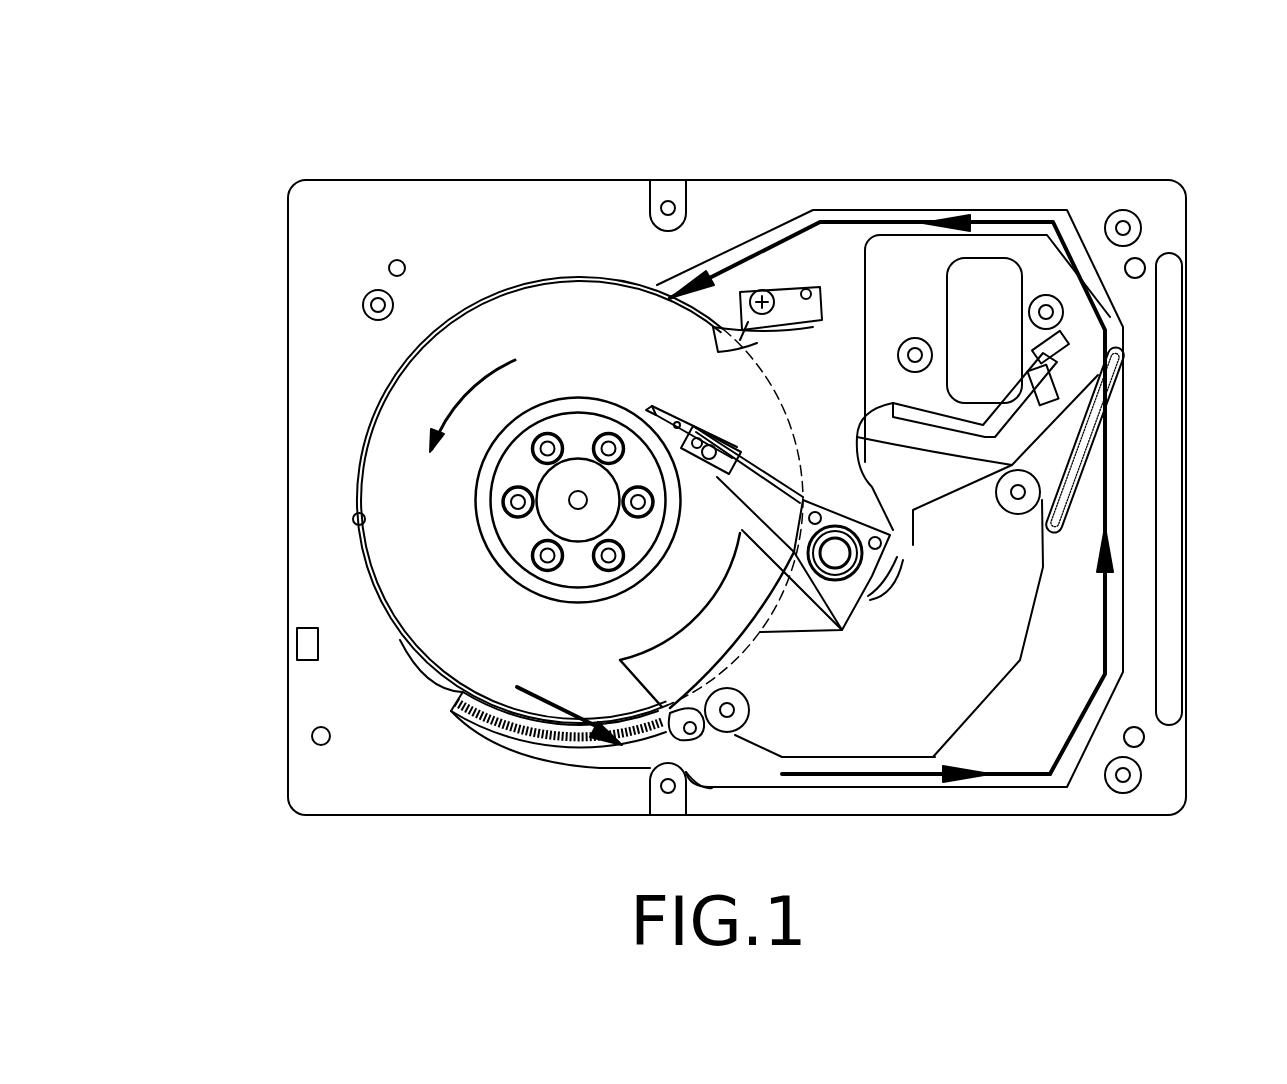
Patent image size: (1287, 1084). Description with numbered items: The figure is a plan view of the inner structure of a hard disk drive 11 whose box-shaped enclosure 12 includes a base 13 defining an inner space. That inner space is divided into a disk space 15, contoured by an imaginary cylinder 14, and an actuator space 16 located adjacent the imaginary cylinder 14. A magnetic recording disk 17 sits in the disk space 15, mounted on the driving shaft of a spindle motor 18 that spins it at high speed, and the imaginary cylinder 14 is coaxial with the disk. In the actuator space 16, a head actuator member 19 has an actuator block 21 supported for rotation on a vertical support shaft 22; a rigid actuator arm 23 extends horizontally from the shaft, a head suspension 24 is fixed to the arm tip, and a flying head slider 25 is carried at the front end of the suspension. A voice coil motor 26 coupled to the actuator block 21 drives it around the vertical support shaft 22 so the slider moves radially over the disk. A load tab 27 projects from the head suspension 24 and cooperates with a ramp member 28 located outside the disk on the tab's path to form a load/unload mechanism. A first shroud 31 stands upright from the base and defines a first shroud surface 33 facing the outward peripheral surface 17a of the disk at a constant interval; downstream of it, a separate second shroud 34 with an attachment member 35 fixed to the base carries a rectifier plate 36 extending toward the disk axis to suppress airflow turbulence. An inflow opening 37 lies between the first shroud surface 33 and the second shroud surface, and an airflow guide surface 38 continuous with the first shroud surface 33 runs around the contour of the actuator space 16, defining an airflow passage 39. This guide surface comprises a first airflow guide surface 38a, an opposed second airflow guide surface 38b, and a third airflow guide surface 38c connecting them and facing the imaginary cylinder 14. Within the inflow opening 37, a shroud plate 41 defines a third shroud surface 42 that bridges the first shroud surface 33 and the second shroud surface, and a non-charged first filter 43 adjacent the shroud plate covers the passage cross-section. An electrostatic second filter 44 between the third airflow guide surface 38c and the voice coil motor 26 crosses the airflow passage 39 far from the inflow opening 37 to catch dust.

The hard disk drive 11 is at (333, 160).
The enclosure 12 is at (522, 178).
The base 13 is at (288, 355).
The imaginary cylinder 14 is at (762, 390).
The disk space 15 is at (586, 357).
The actuator space 16 is at (1068, 707).
The magnetic recording disk 17 is at (400, 398).
The outward peripheral surface 17a is at (366, 521).
The spindle motor 18 is at (543, 532).
The head actuator member 19 is at (765, 467).
The actuator block 21 is at (878, 530).
The vertical support shaft 22 is at (887, 592).
The actuator arm 23 is at (775, 472).
The head suspension 24 is at (702, 465).
The flying head slider 25 is at (667, 420).
The voice coil motor 26 is at (903, 757).
The load tab 27 is at (652, 408).
The ramp member 28 is at (808, 290).
The first shroud 31 is at (374, 632).
The first shroud surface 33 is at (412, 630).
The second shroud 34 is at (802, 625).
The attachment member 35 is at (727, 710).
The rectifier plate 36 is at (618, 663).
The inflow opening 37 is at (465, 695).
The airflow guide surface 38 is at (767, 788).
The first airflow guide surface 38a is at (1035, 790).
The second airflow guide surface 38b is at (900, 215).
The third airflow guide surface 38c is at (1112, 445).
The airflow passage 39 is at (733, 784).
The shroud plate 41 is at (645, 658).
The third shroud surface 42 is at (468, 720).
The first filter 43 is at (530, 740).
The second filter 44 is at (1037, 515).